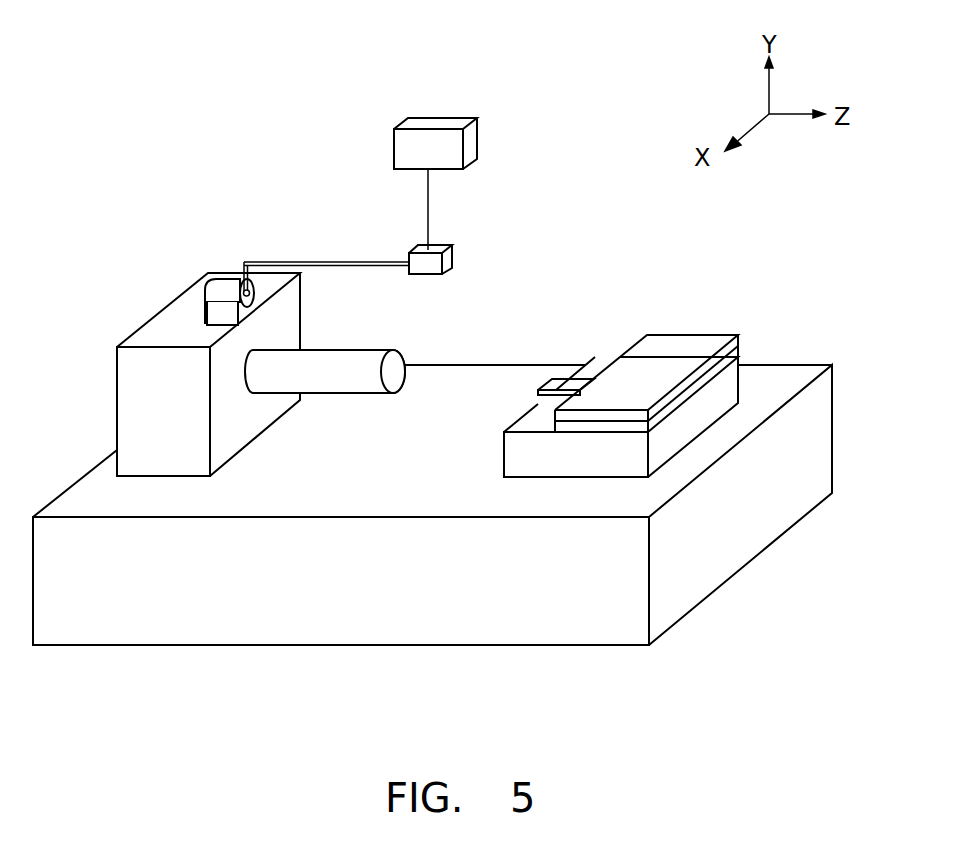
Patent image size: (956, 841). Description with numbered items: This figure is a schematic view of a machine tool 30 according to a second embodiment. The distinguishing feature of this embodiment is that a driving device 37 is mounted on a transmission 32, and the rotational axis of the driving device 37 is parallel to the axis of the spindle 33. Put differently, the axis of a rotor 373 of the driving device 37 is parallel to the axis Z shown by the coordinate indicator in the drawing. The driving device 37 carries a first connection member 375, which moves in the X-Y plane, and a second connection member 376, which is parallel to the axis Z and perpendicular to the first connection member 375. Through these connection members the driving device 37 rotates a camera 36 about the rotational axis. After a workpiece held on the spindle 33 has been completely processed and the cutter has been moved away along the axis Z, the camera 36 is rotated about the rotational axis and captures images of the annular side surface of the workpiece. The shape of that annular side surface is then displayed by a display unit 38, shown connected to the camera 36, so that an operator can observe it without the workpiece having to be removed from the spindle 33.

The machine tool 30 is at (167, 40).
The transmission 32 is at (155, 332).
The spindle 33 is at (340, 368).
The camera 36 is at (452, 261).
The driving device 37 is at (207, 276).
The rotor 373 is at (243, 294).
The first connection member 375 is at (244, 277).
The second connection member 376 is at (377, 267).
The display unit 38 is at (445, 123).